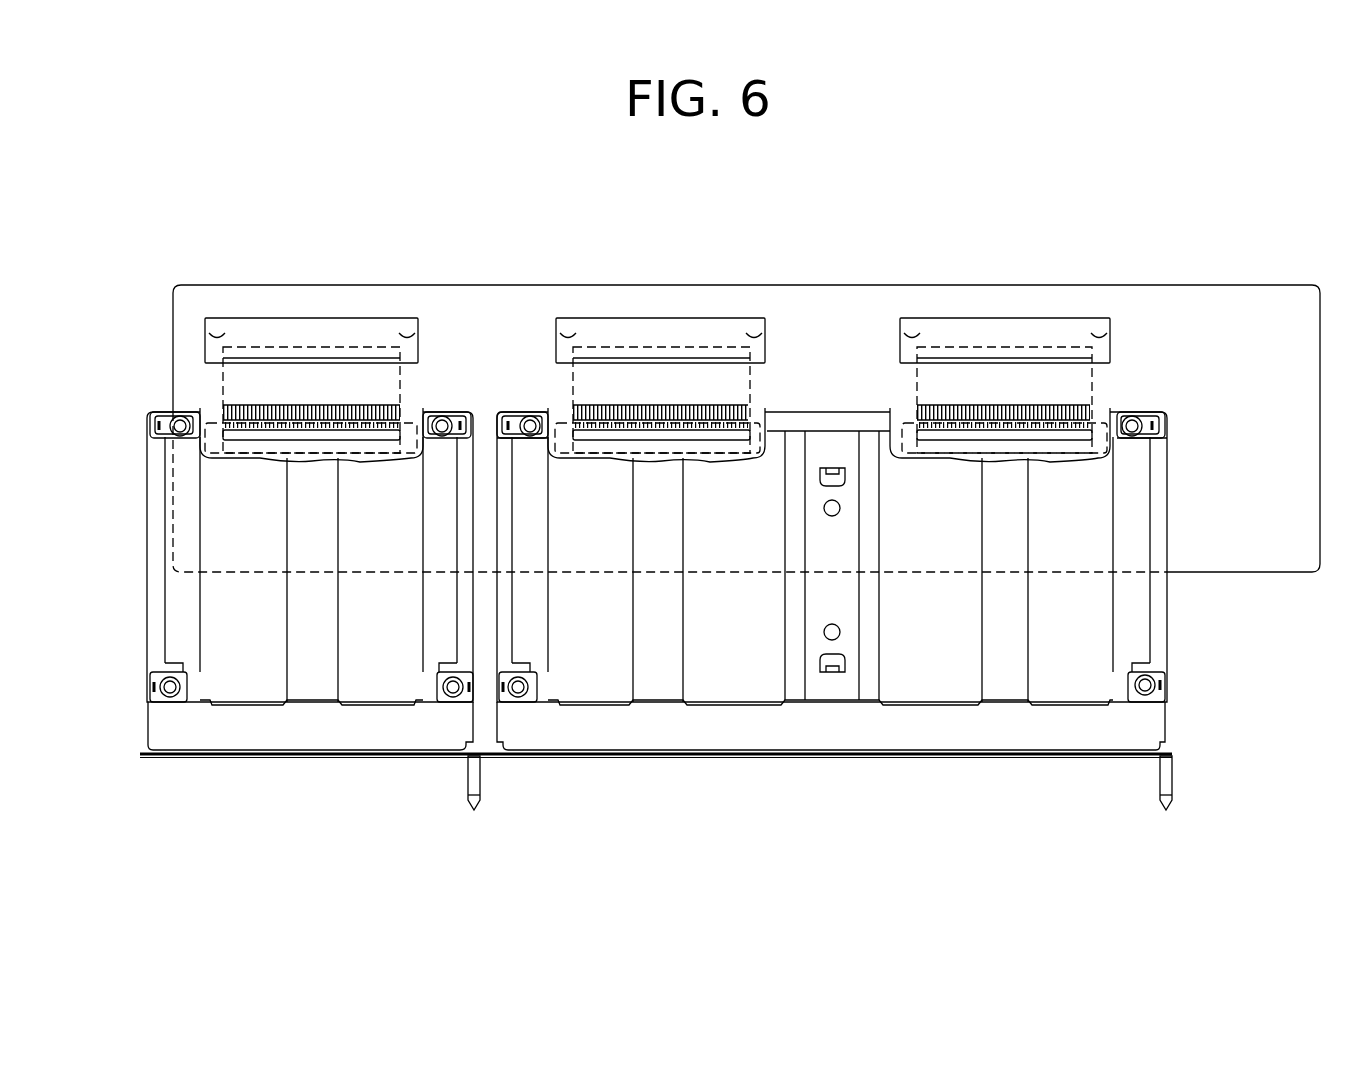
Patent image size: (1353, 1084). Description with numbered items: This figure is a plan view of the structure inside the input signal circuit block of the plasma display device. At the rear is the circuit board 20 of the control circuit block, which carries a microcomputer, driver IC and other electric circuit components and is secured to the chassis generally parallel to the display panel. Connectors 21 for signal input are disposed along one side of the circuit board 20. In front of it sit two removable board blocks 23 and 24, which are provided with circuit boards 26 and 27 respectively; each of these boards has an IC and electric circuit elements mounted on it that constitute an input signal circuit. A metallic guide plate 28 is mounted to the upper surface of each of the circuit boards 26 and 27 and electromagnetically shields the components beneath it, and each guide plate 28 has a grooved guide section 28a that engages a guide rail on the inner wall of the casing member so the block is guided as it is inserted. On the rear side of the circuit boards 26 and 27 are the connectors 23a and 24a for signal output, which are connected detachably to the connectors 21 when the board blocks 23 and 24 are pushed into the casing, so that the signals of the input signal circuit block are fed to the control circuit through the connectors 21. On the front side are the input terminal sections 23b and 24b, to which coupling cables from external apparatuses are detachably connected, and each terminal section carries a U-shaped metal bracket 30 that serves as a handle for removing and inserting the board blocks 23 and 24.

The circuit board 20 is at (420, 298).
The connectors 21 is at (357, 325).
The board block 23 is at (148, 655).
The connector 23a is at (247, 390).
The input terminal section 23b is at (330, 758).
The board block 24 is at (1168, 628).
The connector 24a is at (580, 382).
The input terminal section 24b is at (750, 758).
The circuit board 26 is at (161, 733).
The circuit board 27 is at (530, 733).
The metallic guide plate 28 is at (244, 686).
The guide section 28a is at (310, 681).
The metal bracket 30 is at (476, 812).